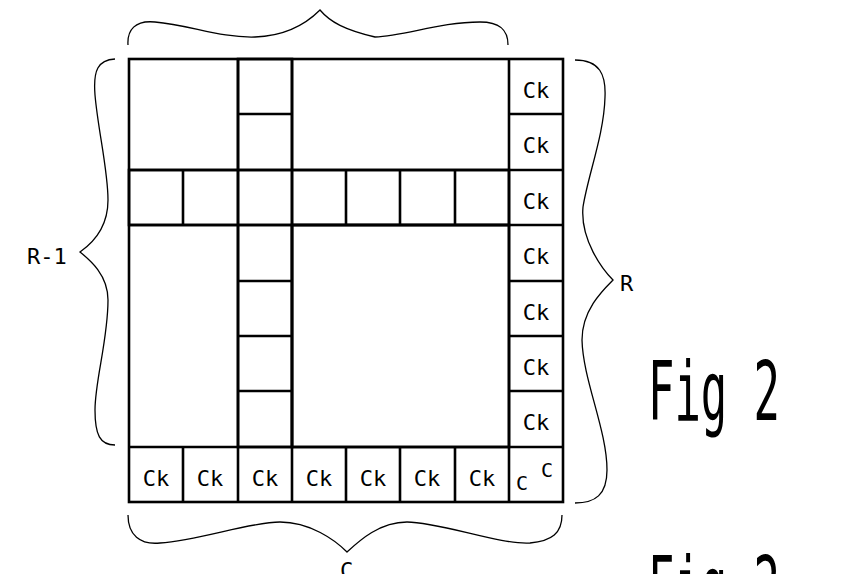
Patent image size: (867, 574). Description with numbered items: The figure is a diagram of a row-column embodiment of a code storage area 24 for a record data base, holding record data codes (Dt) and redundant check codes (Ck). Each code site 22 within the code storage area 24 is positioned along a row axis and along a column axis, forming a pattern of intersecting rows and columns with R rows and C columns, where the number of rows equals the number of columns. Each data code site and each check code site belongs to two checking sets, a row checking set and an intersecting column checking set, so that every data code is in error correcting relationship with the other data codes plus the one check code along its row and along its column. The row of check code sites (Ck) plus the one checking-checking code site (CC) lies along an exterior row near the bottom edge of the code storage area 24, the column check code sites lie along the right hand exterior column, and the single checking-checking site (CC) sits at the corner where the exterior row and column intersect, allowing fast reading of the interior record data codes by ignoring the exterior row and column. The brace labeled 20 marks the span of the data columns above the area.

The data block columns 20 is at (318, 22).
The code site 22 is at (237, 154).
The code storage area 24 is at (340, 343).